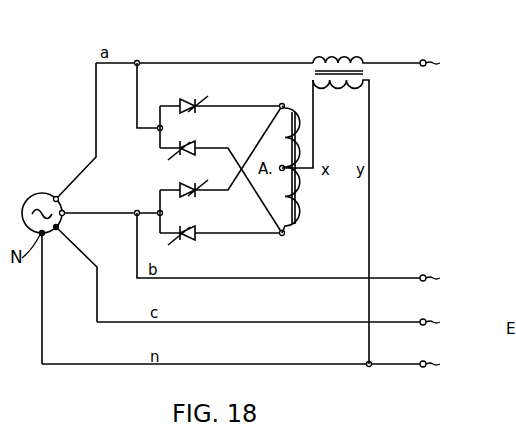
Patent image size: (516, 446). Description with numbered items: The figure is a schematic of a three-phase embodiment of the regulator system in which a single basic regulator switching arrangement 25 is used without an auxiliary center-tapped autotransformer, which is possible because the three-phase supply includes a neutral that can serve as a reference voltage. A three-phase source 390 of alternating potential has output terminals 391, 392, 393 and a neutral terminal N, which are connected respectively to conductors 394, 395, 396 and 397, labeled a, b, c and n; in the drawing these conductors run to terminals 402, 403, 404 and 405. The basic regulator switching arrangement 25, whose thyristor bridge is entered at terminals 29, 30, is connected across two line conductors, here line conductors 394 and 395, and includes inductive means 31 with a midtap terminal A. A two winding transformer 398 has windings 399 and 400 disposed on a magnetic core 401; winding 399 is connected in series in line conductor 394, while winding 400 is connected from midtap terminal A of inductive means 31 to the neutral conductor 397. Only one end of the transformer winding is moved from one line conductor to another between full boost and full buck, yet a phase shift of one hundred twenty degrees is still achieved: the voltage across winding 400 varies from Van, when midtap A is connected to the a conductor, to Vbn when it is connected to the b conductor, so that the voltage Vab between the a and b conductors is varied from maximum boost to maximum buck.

The basic regulator switching arrangement 25 is at (152, 181).
The bridge terminal 29 is at (158, 130).
The bridge terminal 30 is at (158, 212).
The inductive means 31 is at (322, 225).
The three-phase source 390 is at (38, 194).
The output terminal 391 is at (60, 199).
The output terminal 392 is at (64, 215).
The output terminal 393 is at (57, 229).
The line conductor 394 is at (161, 62).
The line conductor 395 is at (302, 279).
The line conductor 396 is at (302, 323).
The neutral conductor 397 is at (302, 365).
The two winding transformer 398 is at (345, 190).
The winding 399 is at (353, 58).
The winding 400 is at (341, 83).
The magnetic core 401 is at (314, 72).
The output terminal 402 is at (448, 64).
The output terminal 403 is at (448, 279).
The output terminal 404 is at (448, 323).
The output terminal 405 is at (448, 365).